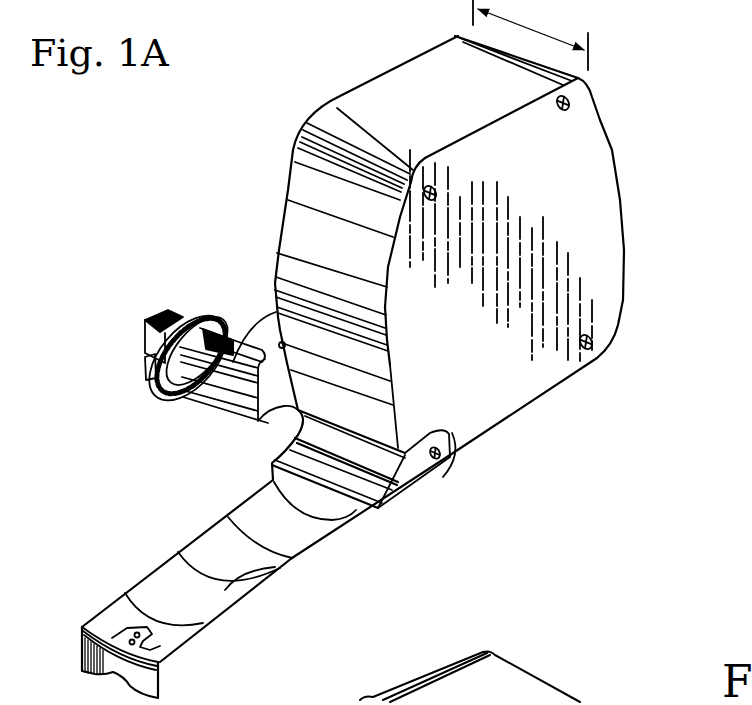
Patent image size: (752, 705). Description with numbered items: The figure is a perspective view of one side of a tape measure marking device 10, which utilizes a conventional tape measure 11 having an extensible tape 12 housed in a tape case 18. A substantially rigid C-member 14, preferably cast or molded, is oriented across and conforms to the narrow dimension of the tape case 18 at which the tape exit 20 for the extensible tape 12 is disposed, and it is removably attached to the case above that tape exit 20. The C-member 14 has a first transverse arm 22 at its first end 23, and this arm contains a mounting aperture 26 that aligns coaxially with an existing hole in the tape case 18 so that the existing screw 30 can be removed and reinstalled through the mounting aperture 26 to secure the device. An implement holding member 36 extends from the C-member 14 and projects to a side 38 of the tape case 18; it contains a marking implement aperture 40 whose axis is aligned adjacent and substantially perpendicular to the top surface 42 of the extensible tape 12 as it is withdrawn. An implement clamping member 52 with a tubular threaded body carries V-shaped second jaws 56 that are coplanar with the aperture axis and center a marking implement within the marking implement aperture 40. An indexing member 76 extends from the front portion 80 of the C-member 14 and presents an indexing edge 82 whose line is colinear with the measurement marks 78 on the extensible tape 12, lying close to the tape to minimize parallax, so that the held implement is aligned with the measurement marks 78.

The tape measure marking device 10 is at (114, 174).
The tape measure 11 is at (654, 103).
The extensible tape 12 is at (207, 634).
The C-member 14 is at (531, 25).
The tape case 18 is at (605, 210).
The tape exit 20 is at (378, 534).
The first transverse arm 22 is at (440, 476).
The first end 23 is at (456, 498).
The mounting aperture 26 is at (439, 428).
The existing screw 30 is at (460, 461).
The implement holding member 36 is at (209, 262).
The side 38 is at (263, 124).
The marking implement aperture 40 is at (251, 343).
The top surface 42 is at (178, 587).
The implement clamping member 52 is at (146, 389).
The second jaws 56 is at (237, 337).
The indexing member 76 is at (406, 534).
The measurement marks 78 is at (258, 577).
The front portion 80 is at (398, 407).
The indexing edge 82 is at (368, 509).